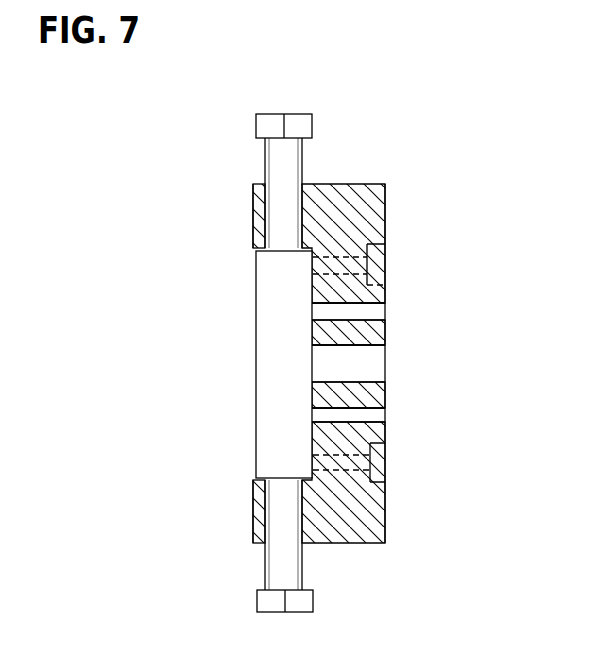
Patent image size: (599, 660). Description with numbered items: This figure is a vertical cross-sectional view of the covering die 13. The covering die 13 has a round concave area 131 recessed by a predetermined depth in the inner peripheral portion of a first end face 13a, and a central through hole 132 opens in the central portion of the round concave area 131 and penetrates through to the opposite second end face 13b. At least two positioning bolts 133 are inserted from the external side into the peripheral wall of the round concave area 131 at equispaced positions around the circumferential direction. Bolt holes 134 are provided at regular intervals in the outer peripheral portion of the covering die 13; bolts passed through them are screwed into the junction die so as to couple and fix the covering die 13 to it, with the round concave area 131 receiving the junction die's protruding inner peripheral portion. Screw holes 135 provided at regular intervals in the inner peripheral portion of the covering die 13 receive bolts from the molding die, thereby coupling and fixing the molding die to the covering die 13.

The covering die 13 is at (344, 184).
The first end face 13a is at (252, 235).
The second end face 13b is at (388, 230).
The round concave area 131 is at (277, 362).
The central through hole 132 is at (362, 362).
The positioning bolts 133 is at (268, 172).
The bolt holes 134 is at (343, 250).
The screw holes 135 is at (365, 311).